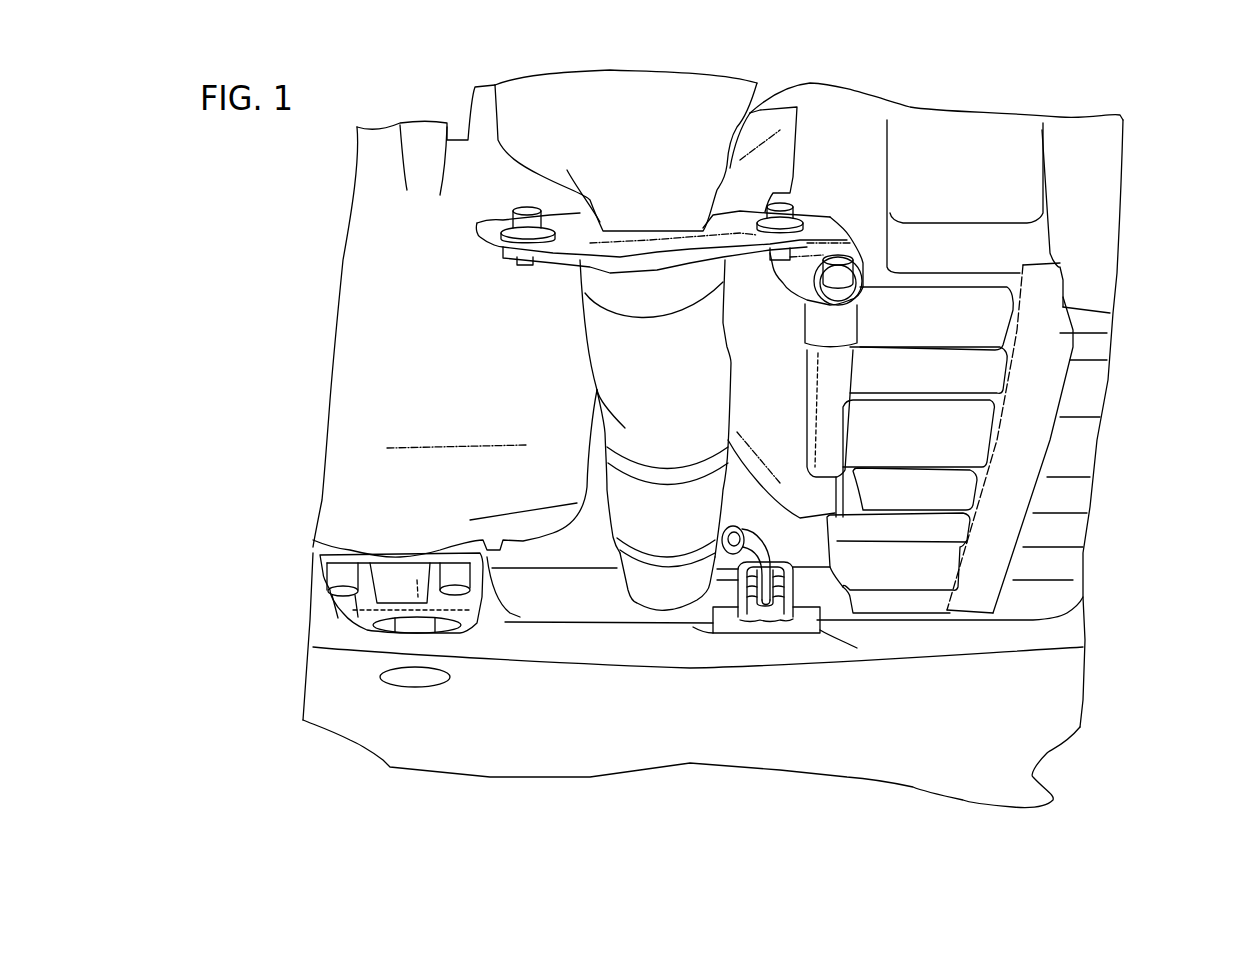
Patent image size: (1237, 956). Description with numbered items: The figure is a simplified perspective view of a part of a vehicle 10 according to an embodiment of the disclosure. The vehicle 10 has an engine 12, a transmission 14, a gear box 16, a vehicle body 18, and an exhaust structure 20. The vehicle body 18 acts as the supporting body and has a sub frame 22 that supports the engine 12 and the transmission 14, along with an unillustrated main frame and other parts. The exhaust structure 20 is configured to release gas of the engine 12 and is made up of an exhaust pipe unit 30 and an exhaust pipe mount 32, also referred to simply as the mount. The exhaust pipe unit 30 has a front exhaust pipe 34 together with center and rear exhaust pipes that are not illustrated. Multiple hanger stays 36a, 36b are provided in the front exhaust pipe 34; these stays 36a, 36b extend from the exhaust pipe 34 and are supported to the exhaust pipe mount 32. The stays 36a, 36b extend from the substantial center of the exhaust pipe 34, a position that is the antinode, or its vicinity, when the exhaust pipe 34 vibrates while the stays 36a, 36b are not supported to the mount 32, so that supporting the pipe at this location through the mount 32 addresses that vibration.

The vehicle 10 is at (258, 164).
The engine 12 is at (453, 363).
The transmission 14 is at (1027, 447).
The gear box 16 is at (573, 600).
The vehicle body 18 is at (1047, 717).
The exhaust structure 20 is at (730, 713).
The sub frame 22 is at (1070, 660).
The exhaust pipe unit 30 is at (641, 611).
The exhaust pipe mount 32 is at (735, 621).
The front exhaust pipe 34 is at (620, 377).
The hanger stay 36a is at (737, 587).
The hanger stay 36b is at (743, 523).